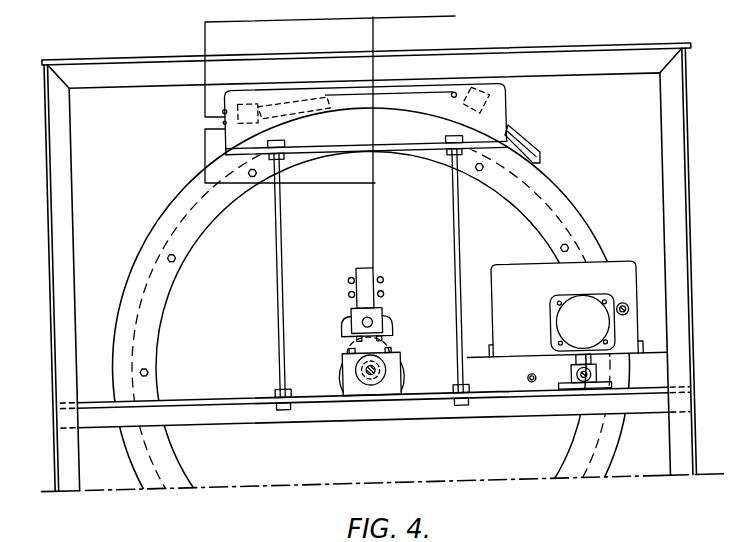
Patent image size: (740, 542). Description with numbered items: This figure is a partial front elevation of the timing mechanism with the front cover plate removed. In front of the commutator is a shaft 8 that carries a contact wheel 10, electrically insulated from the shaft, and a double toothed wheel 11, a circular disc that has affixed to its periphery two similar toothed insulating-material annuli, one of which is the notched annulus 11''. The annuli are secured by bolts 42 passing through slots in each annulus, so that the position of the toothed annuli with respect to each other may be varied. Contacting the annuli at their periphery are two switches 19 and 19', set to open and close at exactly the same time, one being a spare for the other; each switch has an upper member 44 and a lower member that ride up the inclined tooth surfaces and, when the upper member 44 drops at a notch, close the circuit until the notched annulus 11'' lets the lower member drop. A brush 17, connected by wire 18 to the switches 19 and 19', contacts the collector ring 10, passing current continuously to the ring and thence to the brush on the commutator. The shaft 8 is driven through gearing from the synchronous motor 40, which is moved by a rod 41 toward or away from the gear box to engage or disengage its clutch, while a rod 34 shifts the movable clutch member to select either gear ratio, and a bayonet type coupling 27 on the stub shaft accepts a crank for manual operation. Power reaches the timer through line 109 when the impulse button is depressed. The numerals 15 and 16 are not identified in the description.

The shaft 8 is at (373, 370).
The contact wheel 10 is at (383, 341).
The double toothed wheel 11 is at (371, 331).
The toothed insulating annulus 11'' is at (371, 321).
The bracket 15 is at (346, 335).
The coupling 16 is at (357, 310).
The brush 17 is at (384, 336).
The wire 18 is at (376, 208).
The switch 19 is at (534, 131).
The switch 19' is at (363, 73).
The bayonet type coupling 27 is at (525, 380).
The rod 34 is at (629, 312).
The synchronous motor 40 is at (584, 306).
The rod 41 is at (597, 381).
The bolts 42 is at (571, 246).
The upper member 44 is at (577, 530).
The line 109 is at (420, 17).